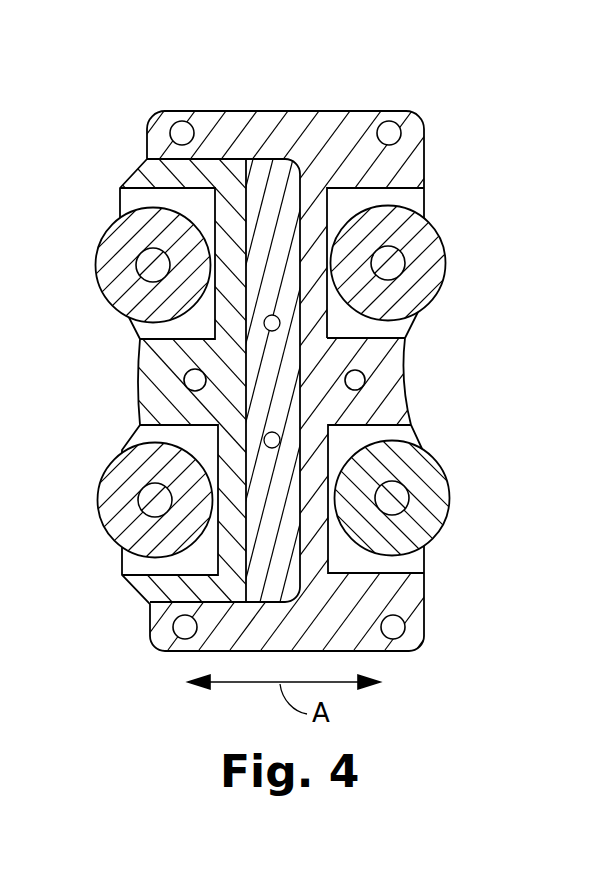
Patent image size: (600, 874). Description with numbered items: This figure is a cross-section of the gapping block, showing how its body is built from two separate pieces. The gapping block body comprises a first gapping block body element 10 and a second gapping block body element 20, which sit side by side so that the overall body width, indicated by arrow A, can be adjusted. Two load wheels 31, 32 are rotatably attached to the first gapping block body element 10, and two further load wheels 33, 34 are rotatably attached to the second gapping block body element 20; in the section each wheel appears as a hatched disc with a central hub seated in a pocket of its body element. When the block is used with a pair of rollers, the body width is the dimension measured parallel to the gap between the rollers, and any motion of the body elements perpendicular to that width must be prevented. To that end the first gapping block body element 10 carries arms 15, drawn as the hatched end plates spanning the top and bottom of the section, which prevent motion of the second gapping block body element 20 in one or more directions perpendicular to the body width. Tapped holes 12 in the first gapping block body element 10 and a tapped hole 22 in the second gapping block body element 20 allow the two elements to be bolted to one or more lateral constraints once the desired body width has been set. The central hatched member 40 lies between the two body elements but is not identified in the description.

The first gapping block body element 10 is at (421, 152).
The tapped holes 12 is at (180, 128).
The arms 15 is at (215, 118).
The second gapping block body element 20 is at (143, 171).
The tapped holes 22 is at (193, 379).
The load wheel 31 is at (430, 243).
The load wheel 32 is at (430, 481).
The load wheel 33 is at (123, 240).
The load wheel 34 is at (123, 476).
The central post 40 is at (271, 176).